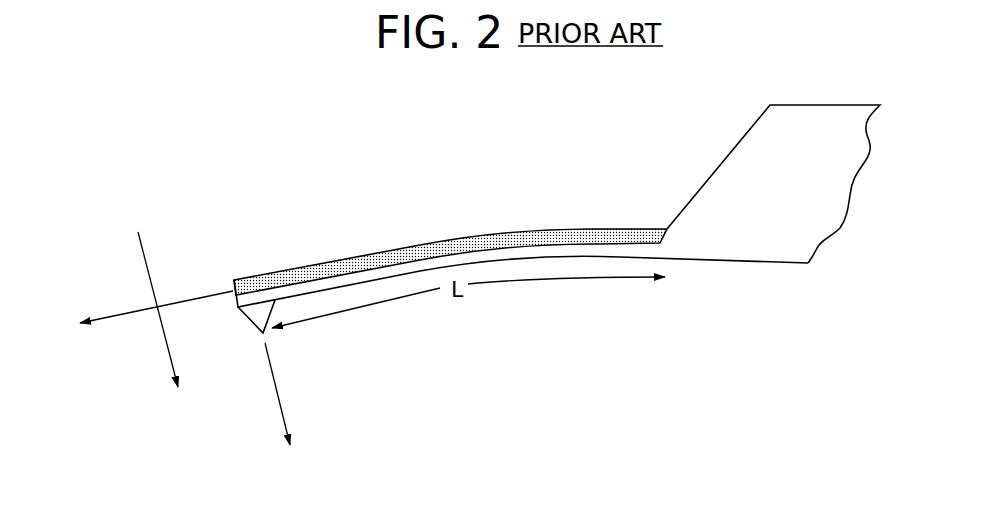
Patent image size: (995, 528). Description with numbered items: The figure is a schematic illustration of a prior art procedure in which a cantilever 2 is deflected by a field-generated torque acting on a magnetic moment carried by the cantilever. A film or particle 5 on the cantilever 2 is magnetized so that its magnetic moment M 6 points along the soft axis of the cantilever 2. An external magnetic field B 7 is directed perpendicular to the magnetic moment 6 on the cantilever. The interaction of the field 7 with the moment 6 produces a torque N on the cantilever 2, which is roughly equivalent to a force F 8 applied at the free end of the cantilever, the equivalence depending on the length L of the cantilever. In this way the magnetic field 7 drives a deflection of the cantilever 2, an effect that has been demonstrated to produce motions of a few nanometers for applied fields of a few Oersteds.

The cantilever 2 is at (555, 252).
The film or particle 5 is at (373, 252).
The magnetic moment M 6 is at (125, 311).
The magnetic field B 7 is at (167, 347).
The force F 8 is at (282, 410).